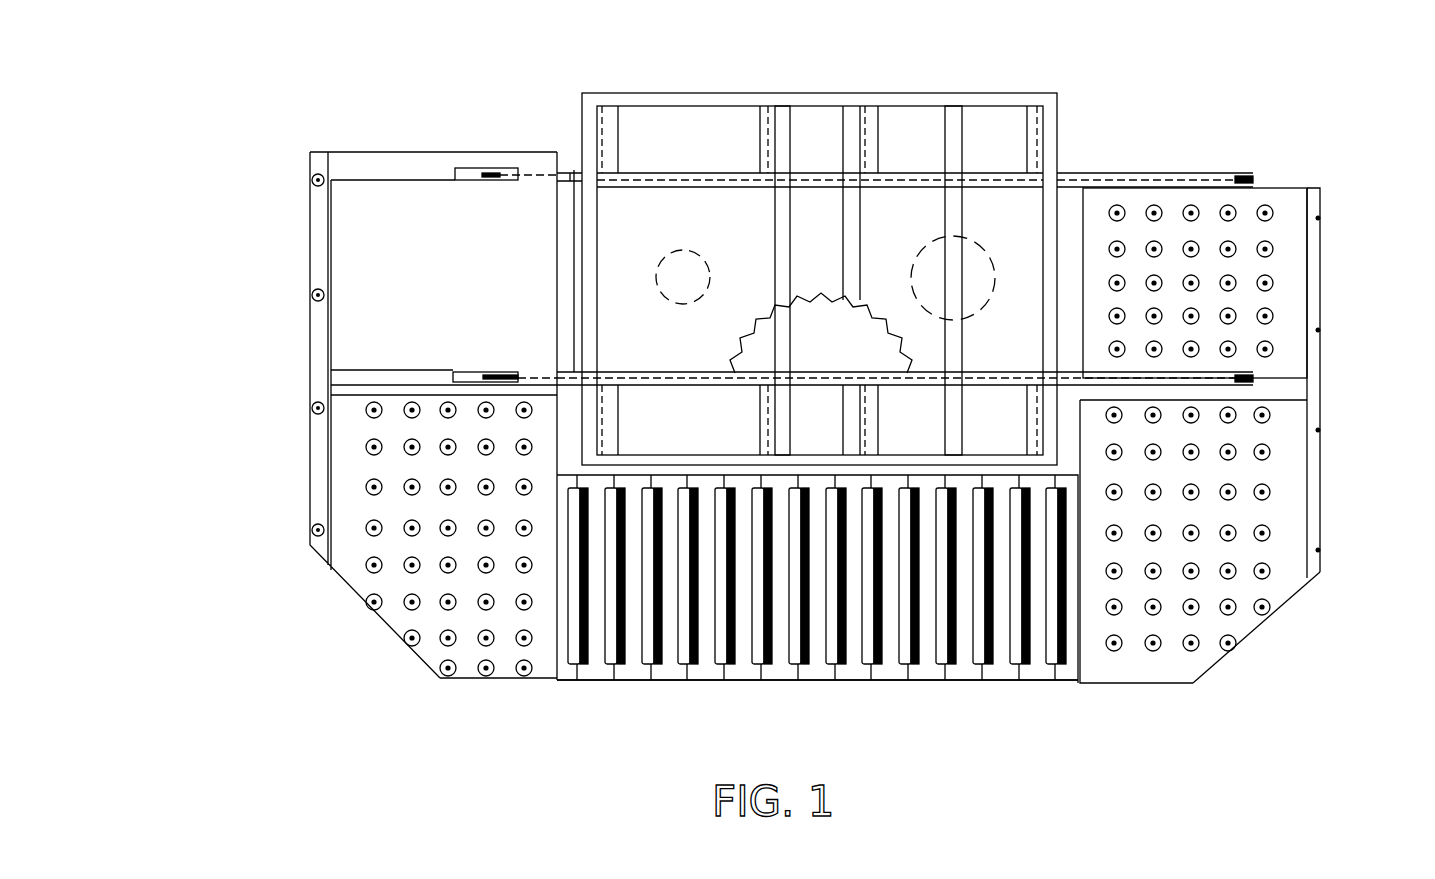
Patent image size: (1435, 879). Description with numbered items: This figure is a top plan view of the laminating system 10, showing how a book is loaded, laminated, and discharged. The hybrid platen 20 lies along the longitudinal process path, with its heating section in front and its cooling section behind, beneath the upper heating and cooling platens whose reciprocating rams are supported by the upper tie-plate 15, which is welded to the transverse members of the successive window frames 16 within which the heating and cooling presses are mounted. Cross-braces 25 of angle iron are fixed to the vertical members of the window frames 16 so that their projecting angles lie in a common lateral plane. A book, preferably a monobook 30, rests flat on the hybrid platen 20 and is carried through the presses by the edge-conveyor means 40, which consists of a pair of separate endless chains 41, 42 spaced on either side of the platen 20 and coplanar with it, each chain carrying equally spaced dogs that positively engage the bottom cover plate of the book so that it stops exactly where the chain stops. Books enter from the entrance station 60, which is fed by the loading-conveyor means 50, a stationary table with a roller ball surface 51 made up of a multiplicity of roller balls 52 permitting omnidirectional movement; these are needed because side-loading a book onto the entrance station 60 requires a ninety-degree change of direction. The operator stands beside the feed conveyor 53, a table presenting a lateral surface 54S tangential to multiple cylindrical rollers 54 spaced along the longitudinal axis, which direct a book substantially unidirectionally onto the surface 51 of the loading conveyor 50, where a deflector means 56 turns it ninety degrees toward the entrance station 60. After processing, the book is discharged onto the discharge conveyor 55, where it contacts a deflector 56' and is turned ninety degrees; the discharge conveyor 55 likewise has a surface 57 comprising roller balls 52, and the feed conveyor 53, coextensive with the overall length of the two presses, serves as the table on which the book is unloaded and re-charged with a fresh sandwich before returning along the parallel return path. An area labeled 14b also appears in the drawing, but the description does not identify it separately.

The laminating system 10 is at (755, 384).
The upper right perforated panel 14b is at (1070, 203).
The upper tie-plate 15 is at (747, 239).
The window frames 16 is at (1040, 138).
The hybrid platen 20 is at (855, 357).
The cross-braces 25 is at (655, 93).
The monobook 30 is at (490, 302).
The edge-conveyor means 40 is at (482, 378).
The endless chain 41 is at (650, 173).
The endless chain 42 is at (735, 375).
The loading-conveyor means 50 is at (373, 617).
The roller ball surface 51 is at (538, 680).
The roller balls 52 is at (487, 676).
The feed conveyor 53 is at (888, 680).
The cylindrical rollers 54 is at (1058, 648).
The lateral surface 54S is at (752, 680).
The discharge conveyor 55 is at (1255, 630).
The deflector means 56 is at (340, 415).
The deflector 56' is at (1369, 383).
The surface 57 is at (1287, 573).
The entrance station 60 is at (505, 152).